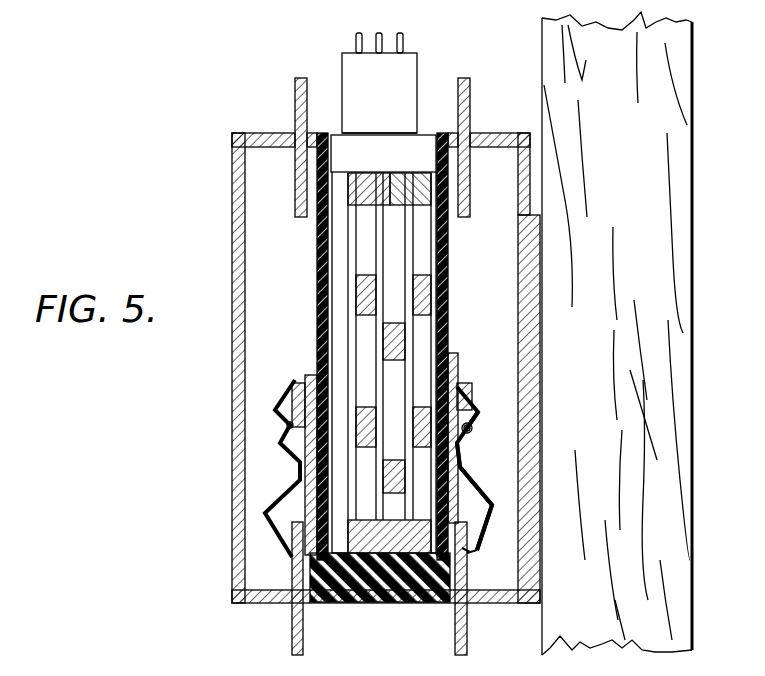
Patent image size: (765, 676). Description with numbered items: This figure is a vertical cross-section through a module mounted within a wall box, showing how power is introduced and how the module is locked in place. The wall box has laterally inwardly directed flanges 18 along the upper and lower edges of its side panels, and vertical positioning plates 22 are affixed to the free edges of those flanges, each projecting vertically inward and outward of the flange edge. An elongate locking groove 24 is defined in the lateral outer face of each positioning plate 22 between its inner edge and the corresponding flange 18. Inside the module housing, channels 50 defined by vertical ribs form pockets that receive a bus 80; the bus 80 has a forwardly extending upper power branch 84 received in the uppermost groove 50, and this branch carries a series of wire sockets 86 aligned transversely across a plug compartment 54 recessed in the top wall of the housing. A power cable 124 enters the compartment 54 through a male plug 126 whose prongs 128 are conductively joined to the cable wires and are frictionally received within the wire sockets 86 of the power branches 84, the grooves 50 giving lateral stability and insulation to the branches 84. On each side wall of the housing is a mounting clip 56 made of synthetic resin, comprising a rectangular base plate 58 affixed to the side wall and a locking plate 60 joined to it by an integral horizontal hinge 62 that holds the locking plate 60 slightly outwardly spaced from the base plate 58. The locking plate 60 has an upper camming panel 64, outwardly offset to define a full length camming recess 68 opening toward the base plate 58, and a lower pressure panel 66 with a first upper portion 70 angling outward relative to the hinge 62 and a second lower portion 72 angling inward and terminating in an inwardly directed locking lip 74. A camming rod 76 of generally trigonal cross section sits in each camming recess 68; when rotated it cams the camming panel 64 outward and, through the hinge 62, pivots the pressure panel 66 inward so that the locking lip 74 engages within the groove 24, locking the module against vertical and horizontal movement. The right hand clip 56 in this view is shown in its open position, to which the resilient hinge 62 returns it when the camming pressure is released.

The flange 18 is at (493, 133).
The positioning plate 22 is at (474, 96).
The locking groove 24 is at (300, 183).
The channel 50 is at (337, 220).
The plug compartment 54 is at (338, 130).
The mounting clip 56 is at (476, 350).
The base plate 58 is at (463, 357).
The locking plate 60 is at (485, 403).
The hinge 62 is at (477, 467).
The camming panel 64 is at (500, 416).
The pressure panel 66 is at (470, 550).
The camming recess 68 is at (288, 403).
The upper portion 70 is at (493, 493).
The lower portion 72 is at (467, 553).
The locking lip 74 is at (467, 550).
The camming rod 76 is at (275, 428).
The bus 80 is at (424, 270).
The upper power branch 84 is at (370, 200).
The wire socket 86 is at (410, 193).
The power cable 124 is at (400, 80).
The male plug 126 is at (373, 133).
The prong 128 is at (363, 207).